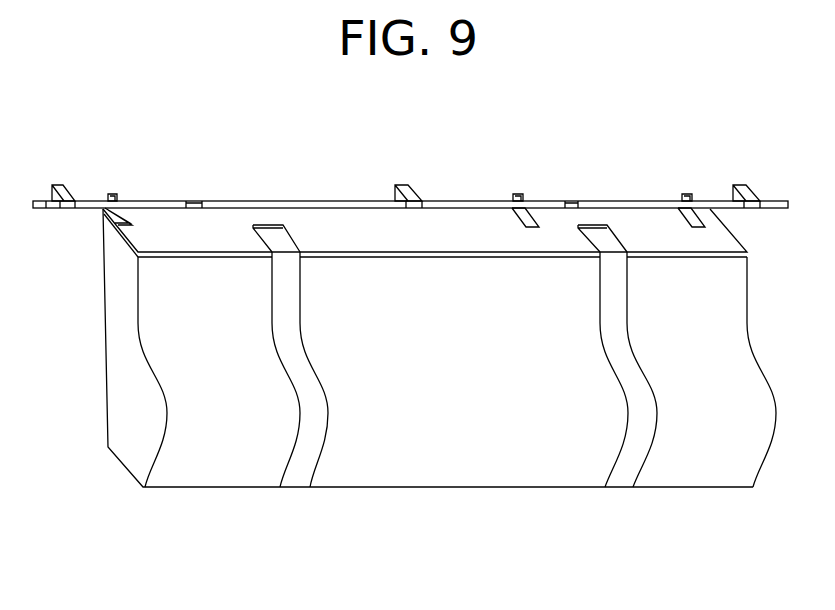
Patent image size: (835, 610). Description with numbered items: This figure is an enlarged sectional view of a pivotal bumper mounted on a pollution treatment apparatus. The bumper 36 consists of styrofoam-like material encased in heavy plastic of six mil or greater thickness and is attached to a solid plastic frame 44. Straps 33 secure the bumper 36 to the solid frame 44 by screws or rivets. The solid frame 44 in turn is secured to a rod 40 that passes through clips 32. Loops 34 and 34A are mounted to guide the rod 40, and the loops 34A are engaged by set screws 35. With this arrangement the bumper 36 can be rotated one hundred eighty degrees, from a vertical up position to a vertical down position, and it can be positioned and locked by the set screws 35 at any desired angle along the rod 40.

The clip 32 is at (67, 187).
The strap 33 is at (310, 467).
The loop 34 is at (192, 200).
The loop 34A is at (130, 218).
The set screw 35 is at (110, 198).
The bumper 36 is at (472, 453).
The rod 40 is at (45, 208).
The solid plastic frame 44 is at (485, 228).